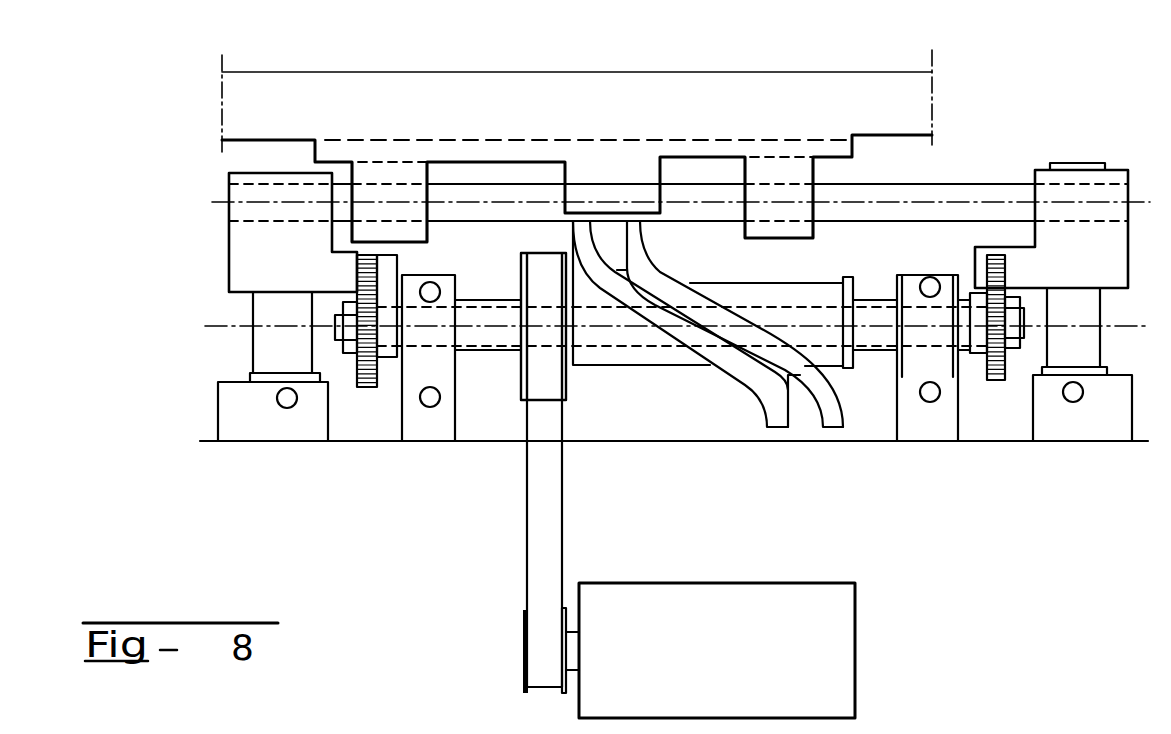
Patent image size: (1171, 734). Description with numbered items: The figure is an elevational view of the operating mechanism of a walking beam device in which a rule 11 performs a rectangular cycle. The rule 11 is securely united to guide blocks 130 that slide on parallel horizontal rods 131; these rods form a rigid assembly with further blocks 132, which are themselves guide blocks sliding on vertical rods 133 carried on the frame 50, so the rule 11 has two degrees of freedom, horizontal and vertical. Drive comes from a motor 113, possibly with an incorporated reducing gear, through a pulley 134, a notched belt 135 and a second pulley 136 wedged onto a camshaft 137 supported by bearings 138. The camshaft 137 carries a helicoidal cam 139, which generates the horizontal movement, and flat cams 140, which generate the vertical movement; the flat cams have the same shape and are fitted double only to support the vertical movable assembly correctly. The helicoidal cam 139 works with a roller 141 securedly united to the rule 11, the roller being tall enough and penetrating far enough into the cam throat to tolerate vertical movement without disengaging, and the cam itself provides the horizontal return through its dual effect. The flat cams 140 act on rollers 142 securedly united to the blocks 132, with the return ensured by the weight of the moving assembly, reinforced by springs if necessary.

The rule 11 is at (672, 87).
The frame 50 is at (378, 443).
The motor 113 is at (833, 620).
The guide block 130 is at (400, 170).
The horizontal rod 131 is at (948, 190).
The block 132 is at (247, 180).
The vertical rod 133 is at (278, 338).
The pulley 134 is at (503, 650).
The notched belt 135 is at (547, 547).
The pulley 136 is at (567, 383).
The camshaft 137 is at (508, 335).
The bearing 138 is at (422, 427).
The helicoidal cam 139 is at (763, 410).
The flat cam 140 is at (368, 388).
The roller 141 is at (771, 296).
The roller 142 is at (377, 265).